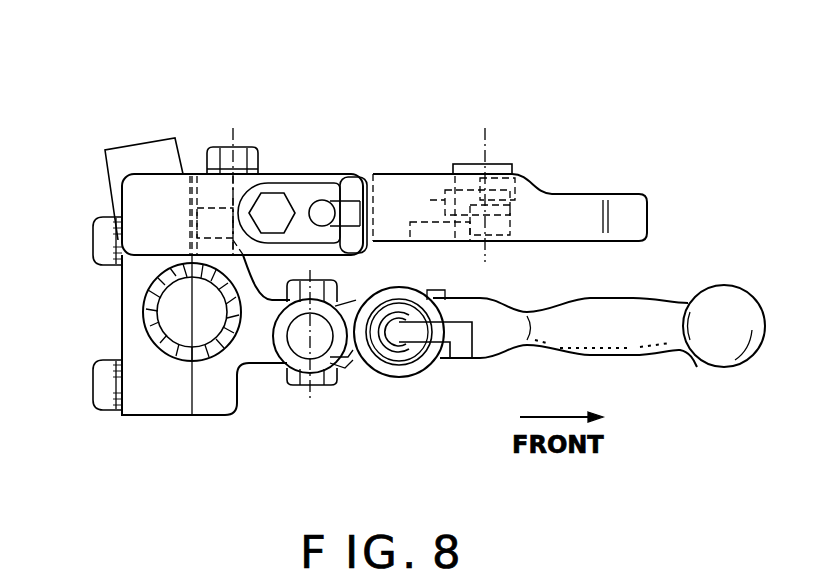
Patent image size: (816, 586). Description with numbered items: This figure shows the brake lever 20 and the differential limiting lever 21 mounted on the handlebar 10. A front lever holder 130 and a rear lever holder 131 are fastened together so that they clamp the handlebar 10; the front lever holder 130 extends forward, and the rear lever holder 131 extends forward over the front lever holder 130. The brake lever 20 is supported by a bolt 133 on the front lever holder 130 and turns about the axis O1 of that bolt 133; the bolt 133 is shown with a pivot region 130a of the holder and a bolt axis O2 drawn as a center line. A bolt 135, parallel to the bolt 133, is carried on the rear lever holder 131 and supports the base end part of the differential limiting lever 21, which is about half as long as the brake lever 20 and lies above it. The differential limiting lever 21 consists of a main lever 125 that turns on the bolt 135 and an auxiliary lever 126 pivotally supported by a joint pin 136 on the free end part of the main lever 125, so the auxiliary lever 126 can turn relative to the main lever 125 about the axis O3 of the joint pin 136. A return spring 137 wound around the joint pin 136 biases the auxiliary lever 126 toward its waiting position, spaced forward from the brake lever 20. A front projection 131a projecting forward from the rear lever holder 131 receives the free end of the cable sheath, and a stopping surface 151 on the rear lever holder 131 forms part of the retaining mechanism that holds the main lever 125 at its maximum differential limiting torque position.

The handlebar 10 is at (122, 308).
The brake lever 20 is at (650, 357).
The differential limiting lever 21 is at (510, 122).
The main lever 125 is at (415, 185).
The auxiliary lever 126 is at (598, 193).
The front lever holder 130 is at (217, 400).
The bracket boss portion 130a is at (255, 355).
The rear lever holder 131 is at (135, 200).
The front projection 131a is at (350, 183).
The bolt 133 is at (335, 282).
The bolt 135 is at (250, 155).
The joint pin 136 is at (512, 166).
The return spring 137 is at (508, 243).
The stopping surface 151 is at (180, 157).
The axis of the bolt O1 is at (312, 392).
The second axis O2 is at (237, 132).
The axis of the joint pin O3 is at (490, 150).